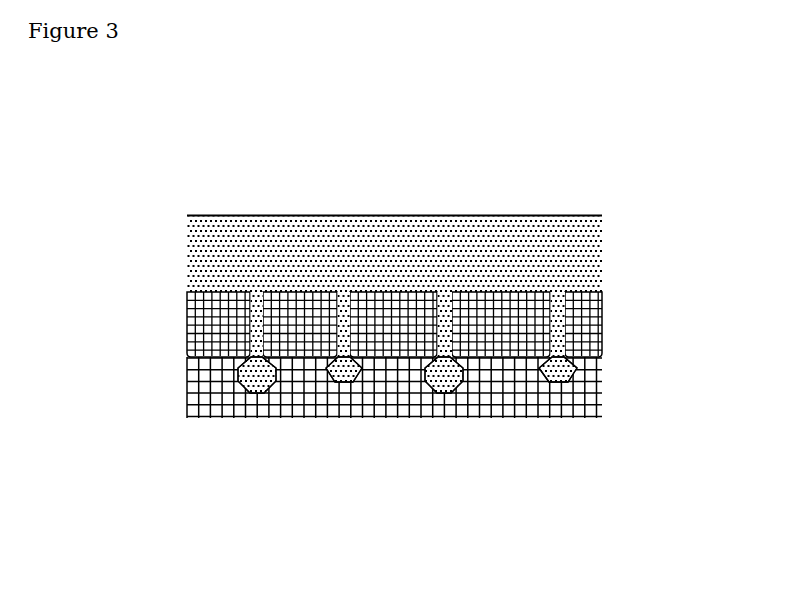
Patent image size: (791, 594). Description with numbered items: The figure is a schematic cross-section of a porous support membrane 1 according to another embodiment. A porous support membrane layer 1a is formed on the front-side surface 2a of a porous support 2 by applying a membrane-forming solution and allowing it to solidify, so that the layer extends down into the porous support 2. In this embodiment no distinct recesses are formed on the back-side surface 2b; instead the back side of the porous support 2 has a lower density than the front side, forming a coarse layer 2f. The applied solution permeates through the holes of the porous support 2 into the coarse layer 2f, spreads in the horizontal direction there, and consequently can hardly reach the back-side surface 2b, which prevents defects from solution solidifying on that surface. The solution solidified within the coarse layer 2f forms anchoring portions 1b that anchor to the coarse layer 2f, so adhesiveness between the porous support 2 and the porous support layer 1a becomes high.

The porous support membrane 1 is at (399, 162).
The porous support membrane layer 1a is at (233, 238).
The anchoring portion 1b is at (237, 372).
The porous support 2 is at (161, 291).
The front-side surface 2a is at (580, 293).
The back-side surface 2b is at (425, 417).
The coarse layer 2f is at (577, 401).